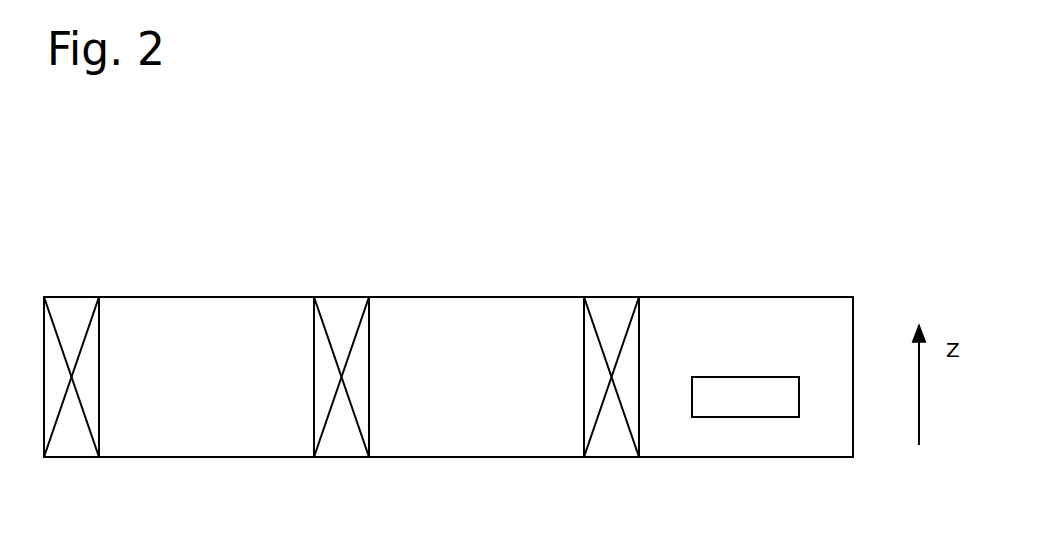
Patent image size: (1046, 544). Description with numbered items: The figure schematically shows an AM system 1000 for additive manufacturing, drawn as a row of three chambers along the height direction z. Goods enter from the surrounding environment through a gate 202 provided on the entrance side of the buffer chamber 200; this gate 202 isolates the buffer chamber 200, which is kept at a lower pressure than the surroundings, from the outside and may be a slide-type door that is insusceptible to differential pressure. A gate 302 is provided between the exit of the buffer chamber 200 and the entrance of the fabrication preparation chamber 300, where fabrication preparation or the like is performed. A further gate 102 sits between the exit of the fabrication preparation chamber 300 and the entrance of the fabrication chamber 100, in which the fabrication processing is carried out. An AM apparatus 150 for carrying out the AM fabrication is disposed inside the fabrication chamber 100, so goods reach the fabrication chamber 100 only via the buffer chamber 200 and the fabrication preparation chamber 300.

The AM system 1000 is at (439, 171).
The gate 202 is at (72, 307).
The buffer chamber 200 is at (207, 307).
The gate 302 is at (342, 312).
The fabrication preparation chamber 300 is at (476, 313).
The gate 102 is at (607, 315).
The fabrication chamber 100 is at (745, 315).
The AM apparatus 150 is at (718, 376).